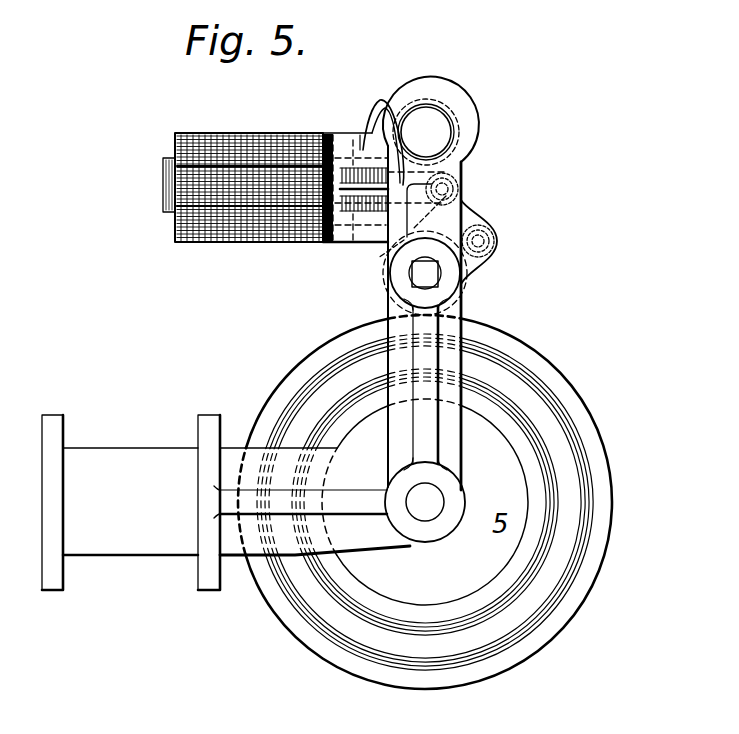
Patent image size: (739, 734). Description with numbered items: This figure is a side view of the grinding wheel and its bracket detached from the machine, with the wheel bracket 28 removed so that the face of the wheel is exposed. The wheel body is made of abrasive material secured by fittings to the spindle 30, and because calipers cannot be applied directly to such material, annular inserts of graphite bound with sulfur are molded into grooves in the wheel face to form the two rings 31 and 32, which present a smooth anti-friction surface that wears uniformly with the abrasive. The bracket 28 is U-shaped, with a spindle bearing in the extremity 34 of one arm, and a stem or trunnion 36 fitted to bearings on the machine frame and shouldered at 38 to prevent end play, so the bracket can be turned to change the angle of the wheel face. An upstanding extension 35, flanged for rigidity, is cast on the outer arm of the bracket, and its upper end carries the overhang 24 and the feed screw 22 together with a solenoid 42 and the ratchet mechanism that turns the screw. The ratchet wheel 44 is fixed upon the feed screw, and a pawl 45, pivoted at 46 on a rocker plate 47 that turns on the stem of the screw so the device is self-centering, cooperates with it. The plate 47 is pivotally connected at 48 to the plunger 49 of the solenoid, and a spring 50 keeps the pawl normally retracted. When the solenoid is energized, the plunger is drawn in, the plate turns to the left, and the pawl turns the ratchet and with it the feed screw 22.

The feed screw 22 is at (430, 278).
The overhang 24 is at (447, 98).
The wheel bracket 28 is at (318, 505).
The spindle 30 is at (427, 502).
The anti-friction ring 31 is at (558, 503).
The anti-friction ring 32 is at (580, 549).
The arm extremity 34 is at (451, 533).
The upstanding extension 35 is at (393, 323).
The stem or trunnion 36 is at (130, 482).
The shoulder 38 is at (198, 578).
The solenoid 42 is at (250, 116).
The ratchet wheel 44 is at (393, 262).
The pawl 45 is at (440, 243).
The pawl pivot 46 is at (481, 243).
The rocker plate 47 is at (442, 233).
The pivotal connection 48 is at (447, 184).
The plunger 49 is at (387, 112).
The spring 50 is at (366, 140).